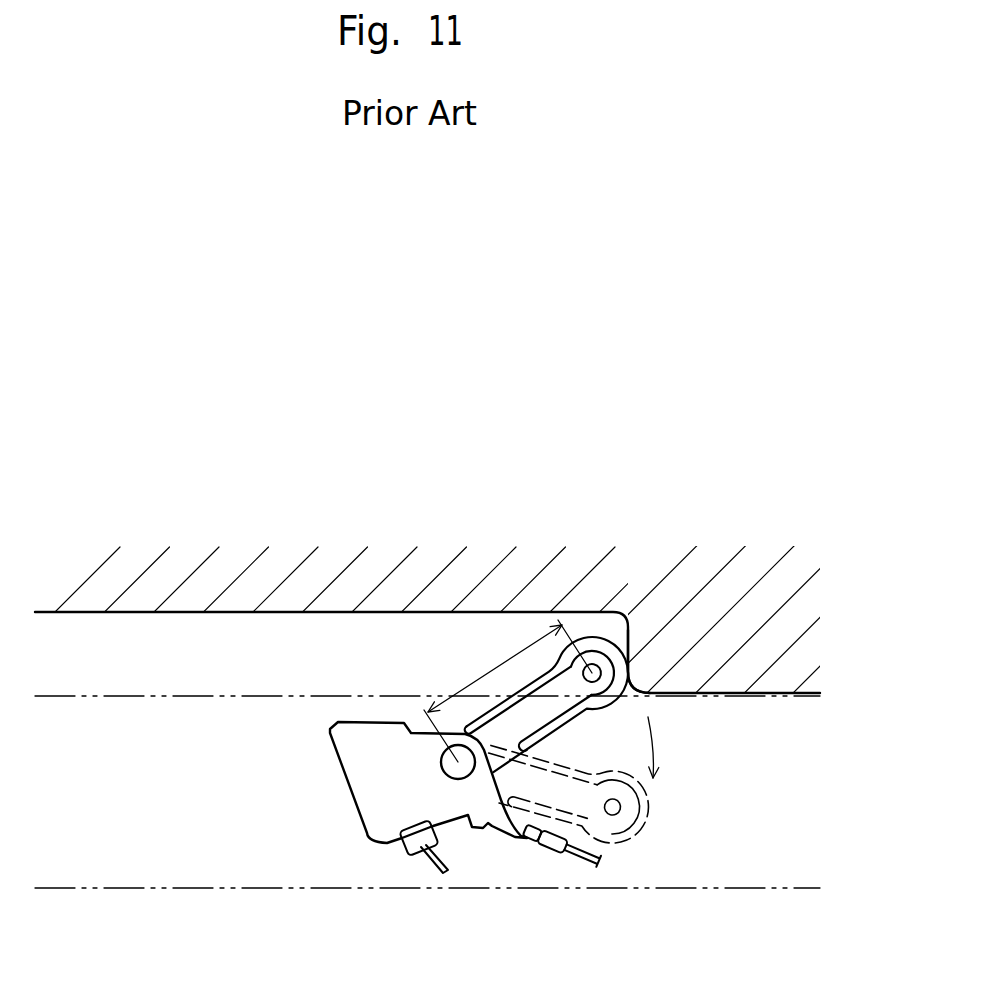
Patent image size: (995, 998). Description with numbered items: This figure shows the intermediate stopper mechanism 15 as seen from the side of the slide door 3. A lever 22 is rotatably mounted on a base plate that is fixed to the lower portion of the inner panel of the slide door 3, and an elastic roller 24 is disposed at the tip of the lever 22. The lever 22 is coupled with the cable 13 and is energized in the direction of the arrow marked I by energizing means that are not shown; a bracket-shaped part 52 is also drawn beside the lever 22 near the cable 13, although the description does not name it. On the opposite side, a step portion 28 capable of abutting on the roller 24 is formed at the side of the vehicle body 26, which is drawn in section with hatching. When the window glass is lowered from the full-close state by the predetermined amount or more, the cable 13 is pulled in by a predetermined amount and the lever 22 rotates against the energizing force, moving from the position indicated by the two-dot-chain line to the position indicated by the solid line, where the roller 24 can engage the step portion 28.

The slide door 3 is at (215, 892).
The cable 13 is at (577, 865).
The intermediate stopper mechanism 15 is at (673, 495).
The lever 22 is at (553, 690).
The elastic roller 24 is at (590, 643).
The vehicle body 26 is at (218, 562).
The step portion 28 is at (633, 643).
The bracket 52 is at (387, 832).